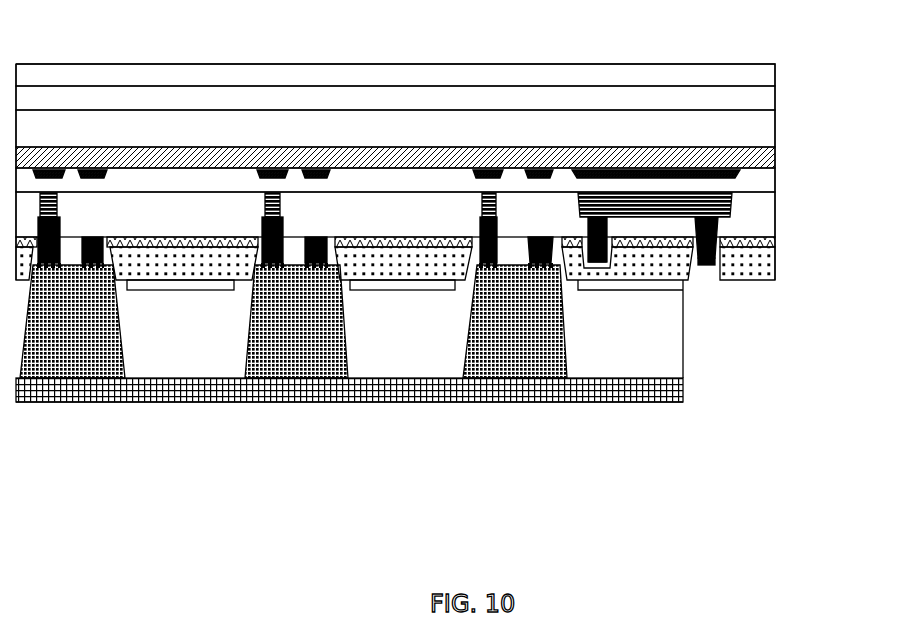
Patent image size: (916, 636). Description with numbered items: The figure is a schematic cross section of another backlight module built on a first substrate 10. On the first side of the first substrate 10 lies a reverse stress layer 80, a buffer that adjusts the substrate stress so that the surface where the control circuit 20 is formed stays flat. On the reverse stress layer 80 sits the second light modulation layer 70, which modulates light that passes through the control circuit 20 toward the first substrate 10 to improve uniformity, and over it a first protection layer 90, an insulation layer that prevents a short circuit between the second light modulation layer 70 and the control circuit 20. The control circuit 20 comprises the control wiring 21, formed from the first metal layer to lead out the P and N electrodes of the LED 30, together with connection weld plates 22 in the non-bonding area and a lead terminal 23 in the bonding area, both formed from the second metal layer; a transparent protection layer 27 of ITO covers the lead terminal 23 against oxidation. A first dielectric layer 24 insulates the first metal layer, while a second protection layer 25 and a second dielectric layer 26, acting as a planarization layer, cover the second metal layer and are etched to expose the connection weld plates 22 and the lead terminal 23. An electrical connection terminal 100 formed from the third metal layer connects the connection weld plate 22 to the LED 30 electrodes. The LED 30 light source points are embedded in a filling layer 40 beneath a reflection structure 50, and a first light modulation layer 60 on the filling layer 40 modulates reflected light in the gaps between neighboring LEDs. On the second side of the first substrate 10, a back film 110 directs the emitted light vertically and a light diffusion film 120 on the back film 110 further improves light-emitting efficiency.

The first substrate 10 is at (766, 133).
The control circuit 20 is at (638, 365).
The control wiring 21 is at (637, 213).
The connection weld plate 22 is at (494, 268).
The lead terminal 23 is at (700, 265).
The first dielectric layer 24 is at (760, 210).
The second protection layer 25 is at (775, 240).
The second dielectric layer 26 is at (766, 262).
The transparent protection layer 27 is at (710, 265).
The LED 30 is at (49, 325).
The filling layer 40 is at (140, 328).
The reflection structure 50 is at (420, 380).
The first light modulation layer 60 is at (186, 290).
The second light modulation layer 70 is at (776, 171).
The reverse stress layer 80 is at (777, 154).
The first protection layer 90 is at (762, 182).
The electrical connection terminal 100 is at (322, 380).
The back film 110 is at (762, 104).
The light diffusion film 120 is at (758, 76).